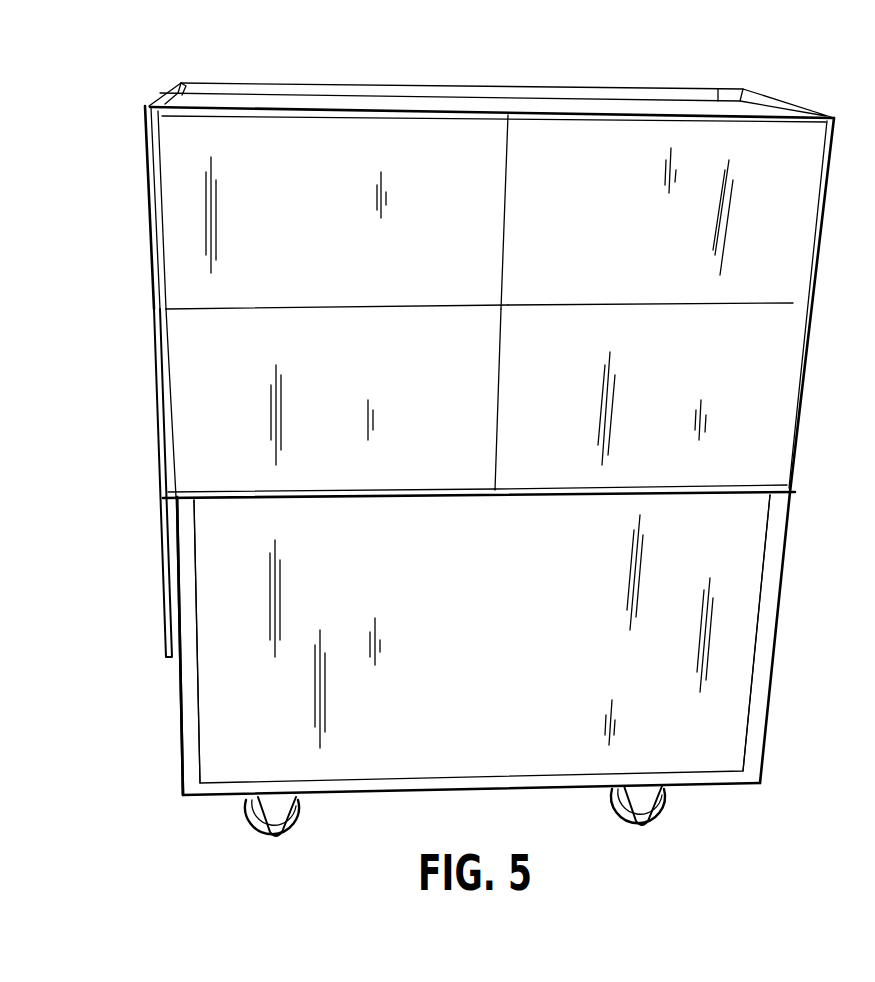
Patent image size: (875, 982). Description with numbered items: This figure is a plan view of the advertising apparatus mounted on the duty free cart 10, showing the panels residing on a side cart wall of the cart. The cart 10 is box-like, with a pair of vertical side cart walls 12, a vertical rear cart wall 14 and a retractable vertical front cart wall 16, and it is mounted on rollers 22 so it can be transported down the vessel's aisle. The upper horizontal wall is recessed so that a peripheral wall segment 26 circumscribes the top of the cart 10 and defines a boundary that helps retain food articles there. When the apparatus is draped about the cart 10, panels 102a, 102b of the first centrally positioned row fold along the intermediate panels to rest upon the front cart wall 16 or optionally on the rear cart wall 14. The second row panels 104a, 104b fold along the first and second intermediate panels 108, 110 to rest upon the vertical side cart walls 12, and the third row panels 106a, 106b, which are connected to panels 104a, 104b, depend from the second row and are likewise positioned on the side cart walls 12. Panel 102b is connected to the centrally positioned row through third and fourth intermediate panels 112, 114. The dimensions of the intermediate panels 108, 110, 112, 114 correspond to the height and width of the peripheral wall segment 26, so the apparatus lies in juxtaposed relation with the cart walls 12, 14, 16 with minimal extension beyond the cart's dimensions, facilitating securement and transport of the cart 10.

The cart 10 is at (138, 687).
The side vertical panels or cart walls 12 is at (497, 638).
The vertical rear cart wall 14 is at (763, 630).
The vertical front cart wall 16 is at (190, 748).
The rollers 22 is at (275, 843).
The peripheral wall segment 26 is at (765, 105).
The panel 102a is at (150, 242).
The panel 102b is at (160, 488).
The panel 104a is at (347, 237).
The panel 104b is at (680, 236).
The panel 106a is at (347, 401).
The panel 106b is at (680, 401).
The first intermediate panel 108 is at (543, 98).
The second intermediate panel 110 is at (480, 87).
The third intermediate panel 112 is at (167, 106).
The fourth intermediate panel 114 is at (165, 93).